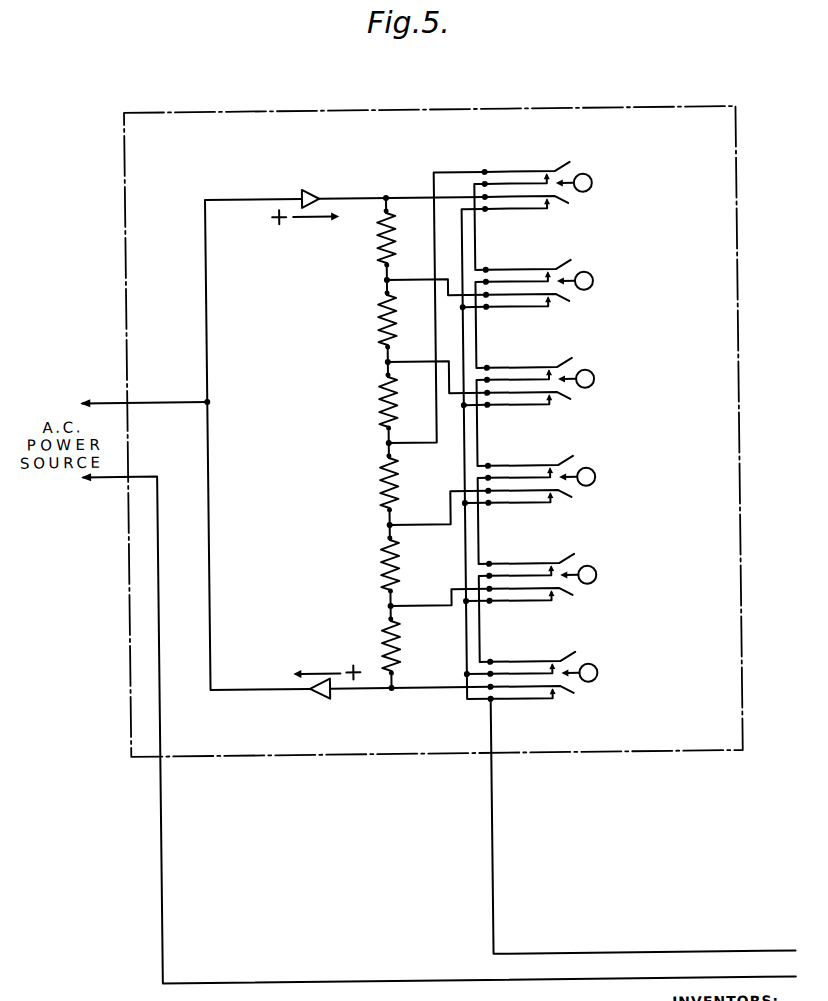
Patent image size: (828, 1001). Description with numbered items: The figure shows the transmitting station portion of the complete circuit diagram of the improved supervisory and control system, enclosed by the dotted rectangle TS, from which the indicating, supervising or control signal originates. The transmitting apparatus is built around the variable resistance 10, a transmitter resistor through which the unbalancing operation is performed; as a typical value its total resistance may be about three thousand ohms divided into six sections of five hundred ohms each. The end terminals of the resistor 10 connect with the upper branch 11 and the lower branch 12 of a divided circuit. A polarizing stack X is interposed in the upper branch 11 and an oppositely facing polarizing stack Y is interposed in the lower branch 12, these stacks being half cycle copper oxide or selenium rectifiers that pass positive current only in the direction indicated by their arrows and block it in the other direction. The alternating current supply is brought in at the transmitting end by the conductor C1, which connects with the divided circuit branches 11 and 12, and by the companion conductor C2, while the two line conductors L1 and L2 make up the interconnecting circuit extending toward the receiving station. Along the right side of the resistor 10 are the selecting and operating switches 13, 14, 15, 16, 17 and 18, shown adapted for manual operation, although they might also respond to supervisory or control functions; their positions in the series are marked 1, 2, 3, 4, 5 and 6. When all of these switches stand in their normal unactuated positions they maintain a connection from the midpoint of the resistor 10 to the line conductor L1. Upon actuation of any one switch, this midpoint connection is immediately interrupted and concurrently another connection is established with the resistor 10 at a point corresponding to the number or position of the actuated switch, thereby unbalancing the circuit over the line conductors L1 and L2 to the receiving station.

The switch 1 is at (525, 180).
The switch 2 is at (527, 278).
The switch 3 is at (528, 376).
The switch 4 is at (529, 474).
The switch 5 is at (530, 572).
The switch 6 is at (531, 670).
The variable resistance 10 is at (358, 572).
The upper branch 11 is at (357, 198).
The lower branch 12 is at (366, 692).
The selecting and operating switch 13 is at (587, 183).
The selecting and operating switch 14 is at (588, 281).
The selecting and operating switch 15 is at (589, 379).
The selecting and operating switch 16 is at (590, 477).
The selecting and operating switch 17 is at (591, 575).
The selecting and operating switch 18 is at (592, 673).
The polarizing stack X is at (306, 192).
The polarizing stack Y is at (327, 698).
The transmitting station TS is at (433, 416).
The conductor C1 is at (118, 401).
The A.C. power source conductor C2 is at (108, 478).
The line conductor L1 is at (708, 955).
The line conductor L2 is at (701, 982).